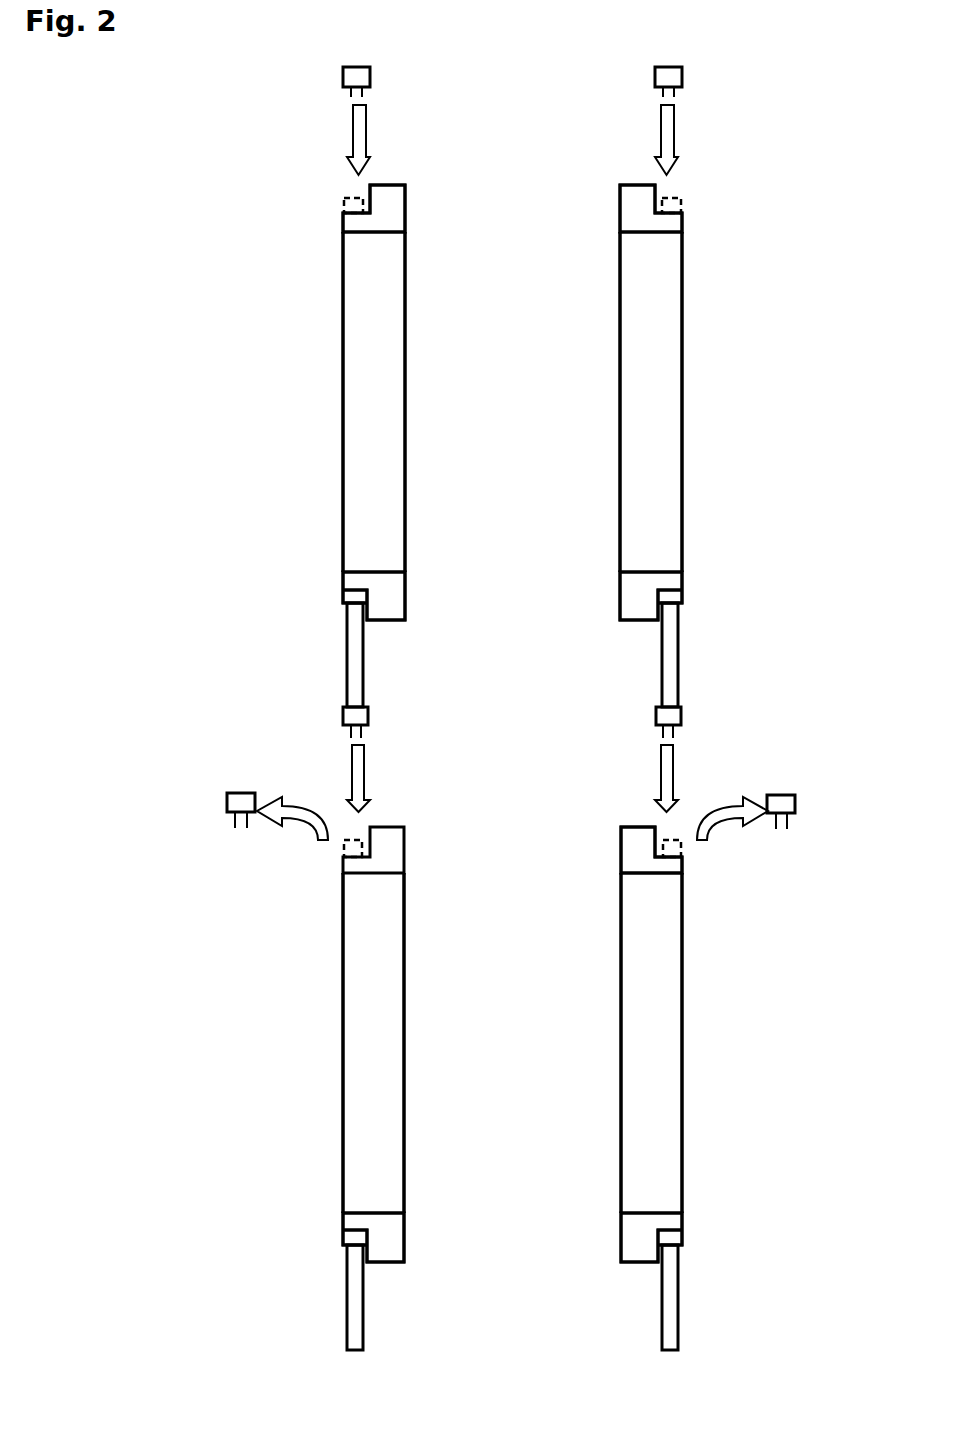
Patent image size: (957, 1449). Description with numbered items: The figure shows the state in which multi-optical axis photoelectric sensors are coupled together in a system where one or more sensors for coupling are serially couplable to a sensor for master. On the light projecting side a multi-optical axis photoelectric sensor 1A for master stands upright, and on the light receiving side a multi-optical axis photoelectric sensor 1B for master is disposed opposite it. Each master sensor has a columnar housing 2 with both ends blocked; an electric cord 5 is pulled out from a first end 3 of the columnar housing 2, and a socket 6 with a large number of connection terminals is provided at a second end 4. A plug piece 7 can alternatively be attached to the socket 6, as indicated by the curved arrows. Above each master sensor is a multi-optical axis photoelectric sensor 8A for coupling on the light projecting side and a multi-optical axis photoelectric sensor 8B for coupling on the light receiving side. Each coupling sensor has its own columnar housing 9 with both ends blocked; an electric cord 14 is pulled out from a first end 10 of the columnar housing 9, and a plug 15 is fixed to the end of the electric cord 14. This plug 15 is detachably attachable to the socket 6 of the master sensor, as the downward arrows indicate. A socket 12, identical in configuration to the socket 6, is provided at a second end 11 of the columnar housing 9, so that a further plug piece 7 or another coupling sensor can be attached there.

The multi-optical axis photoelectric sensor for master on the light projecting side 1A is at (271, 967).
The multi-optical axis photoelectric sensor for master on the light receiving side 1B is at (792, 944).
The columnar housing 2 is at (352, 1039).
The first end 3 is at (345, 1220).
The second end 4 is at (683, 864).
The electric cord 5 is at (352, 1300).
The socket 6 is at (352, 838).
The plug piece 7 is at (343, 75).
The multi-optical axis photoelectric sensor for coupling on the light projecting sid 8A is at (266, 337).
The multi-optical axis photoelectric sensor for coupling on the light receiving side 8B is at (796, 303).
The columnar housing 9 is at (355, 374).
The first end 10 is at (345, 578).
The second end 11 is at (343, 225).
The socket 12 is at (355, 198).
The electric cord 14 is at (356, 661).
The plug 15 is at (370, 718).